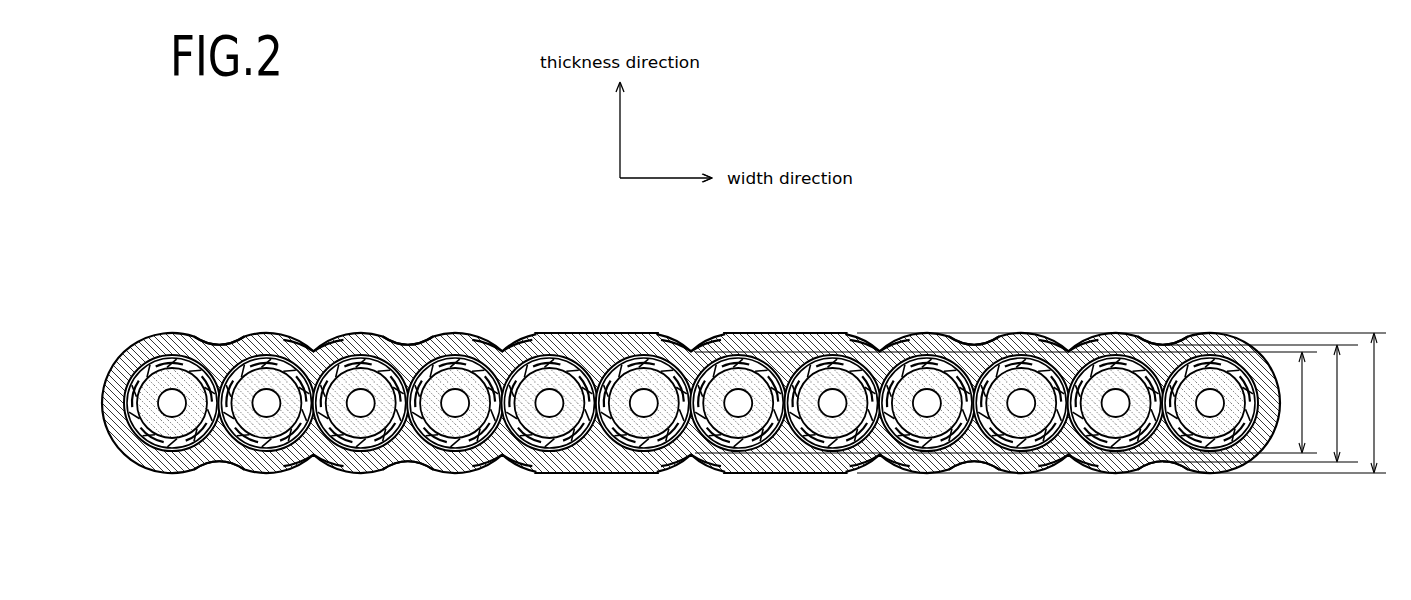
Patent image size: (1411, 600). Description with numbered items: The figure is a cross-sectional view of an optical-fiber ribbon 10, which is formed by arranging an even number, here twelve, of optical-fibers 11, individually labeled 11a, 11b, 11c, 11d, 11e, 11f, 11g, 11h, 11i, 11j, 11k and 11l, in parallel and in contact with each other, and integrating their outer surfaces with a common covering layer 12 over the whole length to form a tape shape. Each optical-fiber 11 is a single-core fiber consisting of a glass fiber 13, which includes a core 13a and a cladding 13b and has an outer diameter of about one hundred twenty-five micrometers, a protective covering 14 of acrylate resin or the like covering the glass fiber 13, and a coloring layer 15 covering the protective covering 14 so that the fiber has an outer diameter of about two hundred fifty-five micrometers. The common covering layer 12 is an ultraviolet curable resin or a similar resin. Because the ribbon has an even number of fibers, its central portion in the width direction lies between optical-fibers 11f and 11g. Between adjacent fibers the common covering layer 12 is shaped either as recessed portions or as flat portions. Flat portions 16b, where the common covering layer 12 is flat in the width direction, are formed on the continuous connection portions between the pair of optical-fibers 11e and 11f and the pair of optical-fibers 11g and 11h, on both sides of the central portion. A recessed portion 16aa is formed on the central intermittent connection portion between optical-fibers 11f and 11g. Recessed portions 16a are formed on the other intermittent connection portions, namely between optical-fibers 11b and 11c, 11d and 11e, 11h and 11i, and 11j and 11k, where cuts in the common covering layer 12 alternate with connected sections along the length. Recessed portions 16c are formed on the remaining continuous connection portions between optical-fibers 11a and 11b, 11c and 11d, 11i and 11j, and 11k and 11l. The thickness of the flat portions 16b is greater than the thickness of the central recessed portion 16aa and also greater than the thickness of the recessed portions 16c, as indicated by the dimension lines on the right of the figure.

The optical-fiber ribbon 10 is at (751, 387).
The optical-fiber 11 is at (680, 423).
The optical-fiber 11a is at (161, 396).
The optical-fiber 11b is at (266, 451).
The optical-fiber 11c is at (361, 451).
The optical-fiber 11d is at (455, 451).
The optical-fiber 11e is at (549, 451).
The optical-fiber 11f is at (644, 451).
The optical-fiber 11g is at (738, 451).
The optical-fiber 11h is at (832, 451).
The optical-fiber 11i is at (927, 451).
The optical-fiber 11j is at (1021, 451).
The optical-fiber 11k is at (1116, 451).
The optical-fiber 11l is at (1210, 444).
The common covering layer 12 is at (1206, 332).
The glass fiber 13 is at (161, 355).
The core 13a is at (172, 372).
The cladding 13b is at (140, 364).
The protective covering 14 is at (157, 421).
The coloring layer 15 is at (163, 438).
The recessed portion 16a is at (1068, 349).
The recessed portion 16aa is at (696, 496).
The flat portion 16b is at (790, 512).
The recessed portion 16c is at (1163, 343).